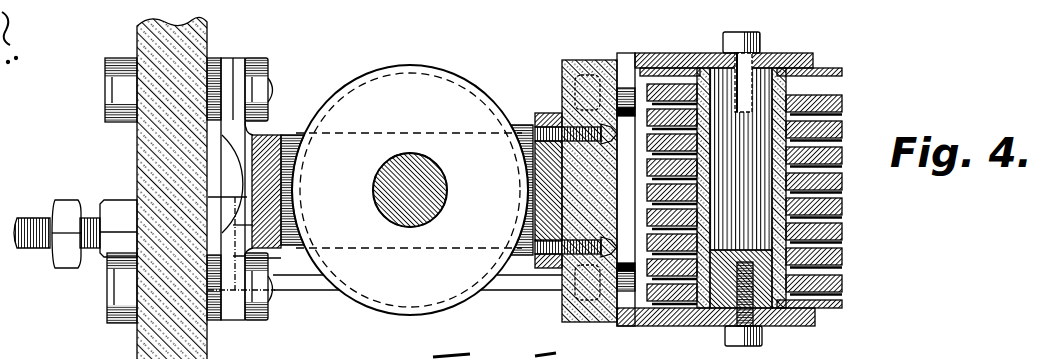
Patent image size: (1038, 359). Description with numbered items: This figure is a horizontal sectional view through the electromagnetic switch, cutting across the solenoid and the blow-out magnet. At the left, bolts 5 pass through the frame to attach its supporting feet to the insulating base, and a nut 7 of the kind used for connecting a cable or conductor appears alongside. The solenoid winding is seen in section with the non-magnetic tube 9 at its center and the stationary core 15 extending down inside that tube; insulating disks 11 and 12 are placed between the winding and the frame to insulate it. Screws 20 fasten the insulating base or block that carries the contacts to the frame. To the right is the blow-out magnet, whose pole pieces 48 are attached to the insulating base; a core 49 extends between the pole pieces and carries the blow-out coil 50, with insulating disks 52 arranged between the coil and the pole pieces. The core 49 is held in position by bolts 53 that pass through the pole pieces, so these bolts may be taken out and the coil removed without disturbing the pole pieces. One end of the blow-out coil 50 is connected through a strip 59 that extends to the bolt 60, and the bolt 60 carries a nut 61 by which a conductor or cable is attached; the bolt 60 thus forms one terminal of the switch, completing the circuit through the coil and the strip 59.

The bolts 5 is at (277, 88).
The nut 7 is at (274, 135).
The non-magnetic tube 9 is at (448, 203).
The insulating disk 11 is at (172, 188).
The insulating disk 12 is at (407, 190).
The stationary core 15 is at (445, 183).
The screws 20 is at (613, 137).
The pole pieces 48 is at (669, 55).
The core 49 is at (741, 188).
The blow-out coil 50 is at (843, 257).
The insulating disks 52 is at (831, 68).
The bolts 53 is at (759, 36).
The strip 59 is at (313, 285).
The bolt 60 is at (41, 250).
The nut 61 is at (73, 266).